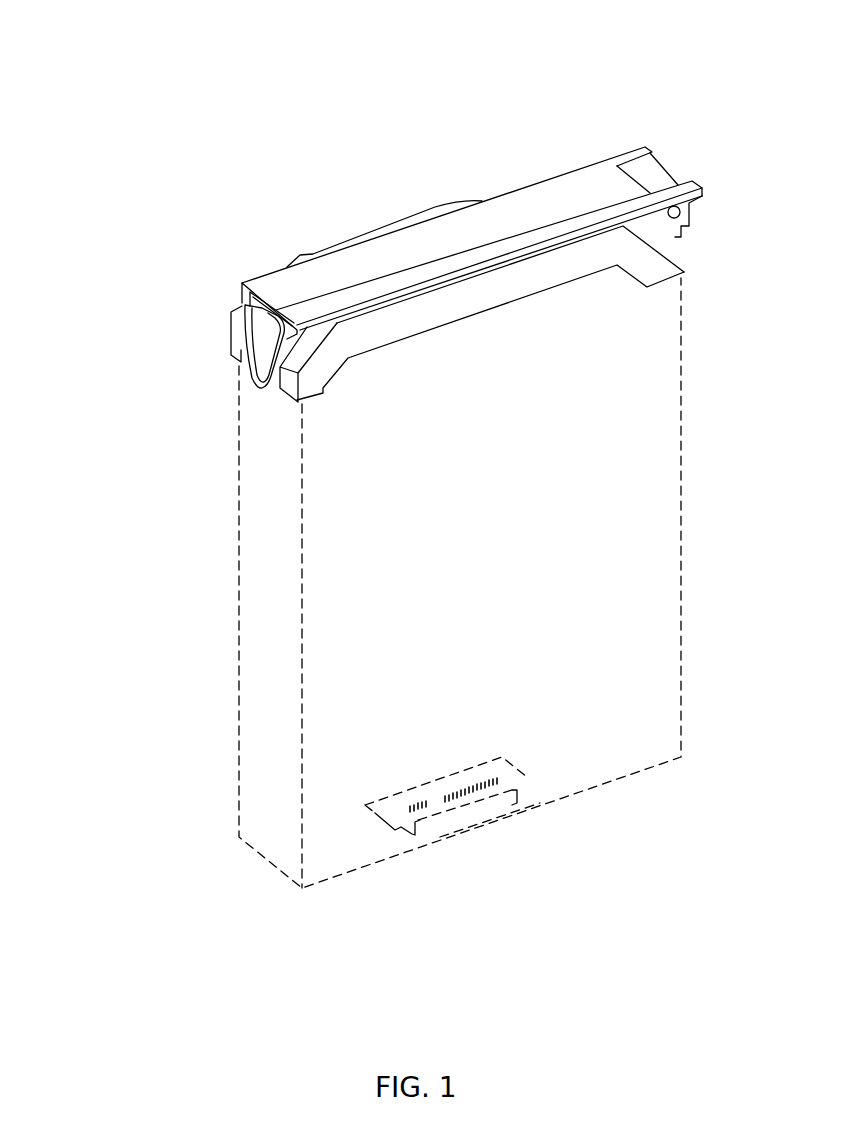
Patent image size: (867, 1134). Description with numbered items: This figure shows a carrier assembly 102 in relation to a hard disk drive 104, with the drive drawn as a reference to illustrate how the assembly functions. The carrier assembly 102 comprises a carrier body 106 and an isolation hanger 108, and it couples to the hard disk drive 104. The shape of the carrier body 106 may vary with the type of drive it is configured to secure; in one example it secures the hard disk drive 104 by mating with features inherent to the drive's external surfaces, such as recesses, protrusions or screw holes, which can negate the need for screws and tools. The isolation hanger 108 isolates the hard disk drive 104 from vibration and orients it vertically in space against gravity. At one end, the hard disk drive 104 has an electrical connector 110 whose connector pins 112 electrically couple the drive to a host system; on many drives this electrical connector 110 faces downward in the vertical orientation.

The carrier assembly 102 is at (682, 148).
The hard disk drive 104 is at (622, 527).
The carrier body 106 is at (450, 232).
The isolation hanger 108 is at (257, 330).
The electrical connector 110 is at (527, 775).
The connector pins 112 is at (415, 804).